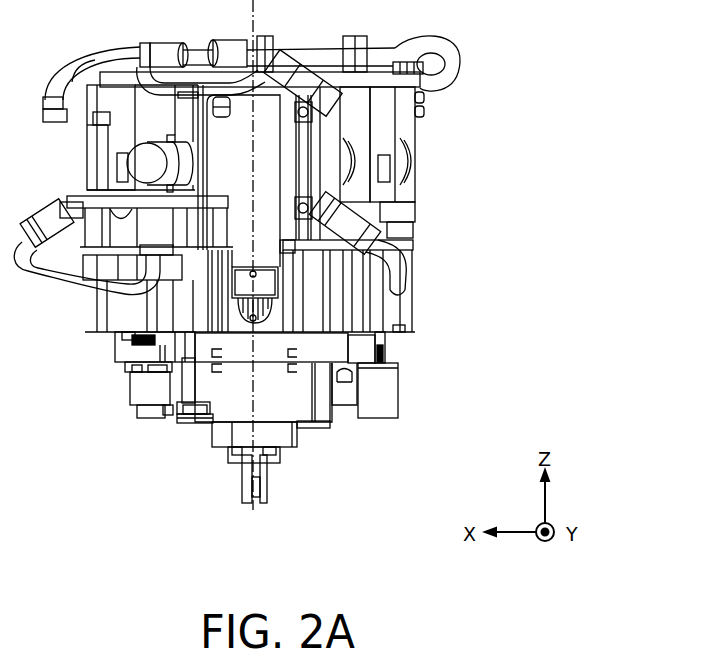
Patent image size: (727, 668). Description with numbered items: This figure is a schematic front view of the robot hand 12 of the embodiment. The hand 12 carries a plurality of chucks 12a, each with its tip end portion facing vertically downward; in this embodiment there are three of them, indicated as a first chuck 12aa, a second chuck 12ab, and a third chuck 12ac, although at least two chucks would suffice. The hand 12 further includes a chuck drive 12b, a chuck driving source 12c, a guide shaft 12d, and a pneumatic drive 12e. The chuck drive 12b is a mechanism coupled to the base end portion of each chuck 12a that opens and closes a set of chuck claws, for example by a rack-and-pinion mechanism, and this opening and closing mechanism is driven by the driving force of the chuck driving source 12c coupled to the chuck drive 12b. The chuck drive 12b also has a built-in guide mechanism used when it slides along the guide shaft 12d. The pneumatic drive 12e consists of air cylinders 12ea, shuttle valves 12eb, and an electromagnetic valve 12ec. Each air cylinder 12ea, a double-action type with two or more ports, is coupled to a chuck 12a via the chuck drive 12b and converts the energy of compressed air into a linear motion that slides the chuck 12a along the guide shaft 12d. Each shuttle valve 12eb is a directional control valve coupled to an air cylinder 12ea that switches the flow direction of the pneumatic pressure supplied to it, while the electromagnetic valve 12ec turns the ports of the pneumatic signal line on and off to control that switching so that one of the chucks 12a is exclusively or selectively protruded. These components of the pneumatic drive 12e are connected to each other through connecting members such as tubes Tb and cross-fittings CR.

The hand 12 is at (481, 40).
The chucks 12a is at (365, 533).
The first chuck 12aa is at (238, 472).
The second chuck 12ab is at (152, 413).
The third chuck 12ac is at (378, 416).
The chuck drive 12b is at (288, 393).
The chuck driving source 12c is at (278, 313).
The guide shaft 12d is at (193, 310).
The pneumatic drive 12e is at (500, 118).
The air cylinder 12ea is at (320, 160).
The shuttle valve 12eb is at (398, 228).
The electromagnetic valve 12ec is at (280, 136).
The cross-fitting CR is at (377, 46).
The tube Tb is at (407, 262).